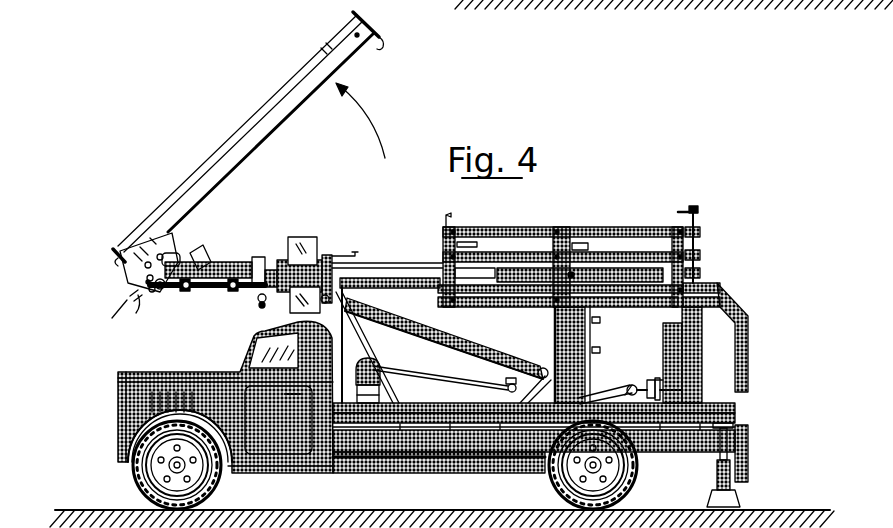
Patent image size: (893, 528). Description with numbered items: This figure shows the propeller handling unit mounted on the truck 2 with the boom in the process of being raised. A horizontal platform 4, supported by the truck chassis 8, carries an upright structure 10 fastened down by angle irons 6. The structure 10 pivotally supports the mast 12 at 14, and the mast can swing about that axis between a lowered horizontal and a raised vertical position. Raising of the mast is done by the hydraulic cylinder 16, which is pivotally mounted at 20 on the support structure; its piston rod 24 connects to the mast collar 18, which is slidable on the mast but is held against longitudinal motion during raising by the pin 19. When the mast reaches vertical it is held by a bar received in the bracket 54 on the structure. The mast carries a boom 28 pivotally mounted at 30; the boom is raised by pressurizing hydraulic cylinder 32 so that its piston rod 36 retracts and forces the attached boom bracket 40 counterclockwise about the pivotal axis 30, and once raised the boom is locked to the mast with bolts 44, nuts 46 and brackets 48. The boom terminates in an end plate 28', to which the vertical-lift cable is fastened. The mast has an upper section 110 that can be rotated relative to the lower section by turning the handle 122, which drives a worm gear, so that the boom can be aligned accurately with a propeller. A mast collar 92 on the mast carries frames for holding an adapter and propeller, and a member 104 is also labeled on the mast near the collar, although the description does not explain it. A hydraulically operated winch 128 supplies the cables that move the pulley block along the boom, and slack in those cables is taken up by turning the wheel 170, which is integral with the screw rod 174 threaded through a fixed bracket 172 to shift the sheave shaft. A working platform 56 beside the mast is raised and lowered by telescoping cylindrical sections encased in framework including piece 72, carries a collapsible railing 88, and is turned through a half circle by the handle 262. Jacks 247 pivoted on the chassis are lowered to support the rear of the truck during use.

The truck 2 is at (162, 368).
The horizontal platform 4 is at (735, 407).
The angle irons 6 is at (588, 392).
The truck chassis 8 is at (678, 443).
The upright structure 10 is at (562, 315).
The mast 12 is at (625, 275).
The pivotal axis of mast 14 is at (588, 240).
The hydraulic cylinder 16 is at (475, 345).
The mast collar 18 is at (330, 258).
The pin 19 is at (325, 254).
The pivotal axis of cylinder 20 is at (543, 365).
The piston rod 24 is at (350, 297).
The boom 28 is at (246, 152).
The end plate of the boom 28' is at (379, 55).
The pivotal axis of boom 30 is at (175, 252).
The hydraulic cylinder 32 is at (207, 291).
The piston rod 36 is at (166, 292).
The boom bracket 40 is at (146, 282).
The bolts 44 is at (143, 312).
The nuts 46 is at (130, 303).
The brackets 48 is at (116, 262).
The bracket 54 is at (598, 352).
The working platform 56 is at (647, 355).
The telescoping framework piece 72 is at (696, 330).
The collapsible railing 88 is at (510, 230).
The mast collar 92 is at (265, 258).
The beam 104 is at (425, 262).
The upper section of the mast 110 is at (232, 262).
The handle 122 is at (261, 306).
The hydraulically operated winch 128 is at (358, 367).
The wheel 170 is at (680, 380).
The fixed bracket 172 is at (628, 380).
The screw rod 174 is at (650, 382).
The jacks 247 is at (733, 480).
The handle 262 is at (683, 205).